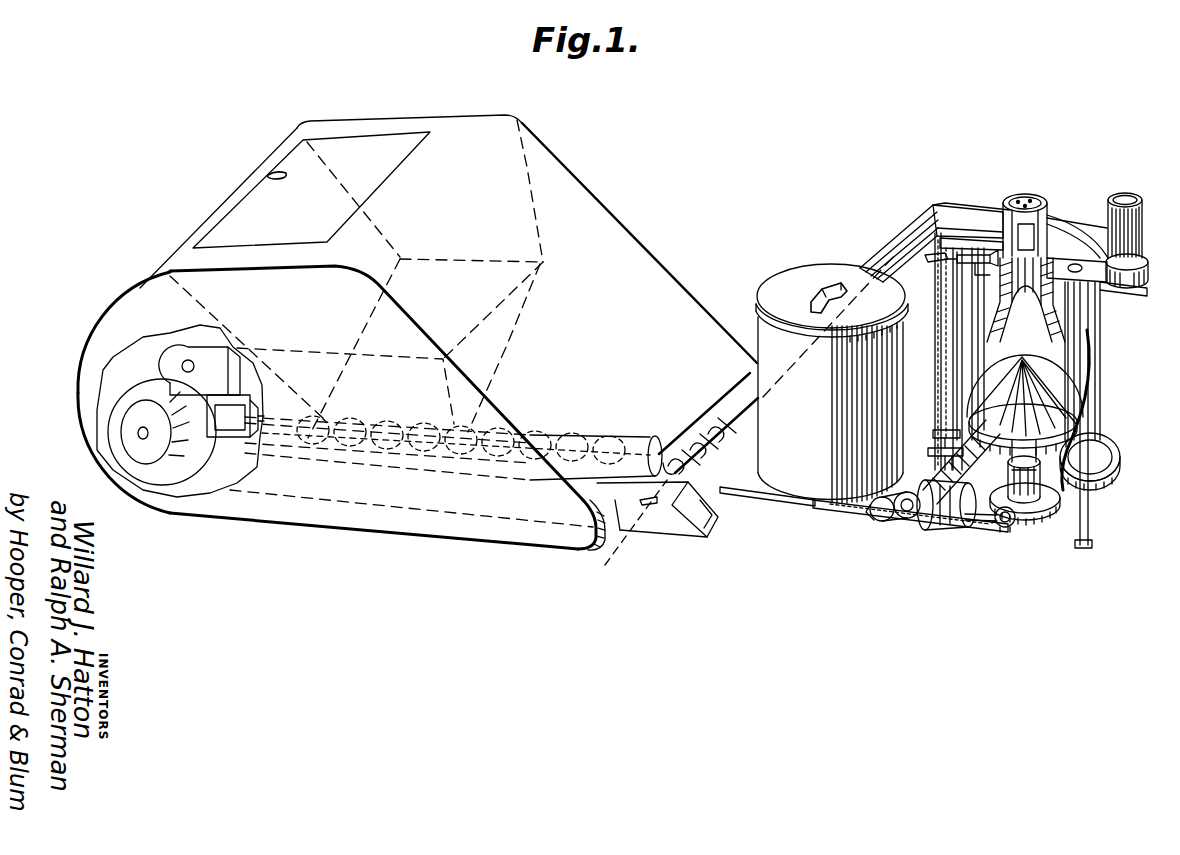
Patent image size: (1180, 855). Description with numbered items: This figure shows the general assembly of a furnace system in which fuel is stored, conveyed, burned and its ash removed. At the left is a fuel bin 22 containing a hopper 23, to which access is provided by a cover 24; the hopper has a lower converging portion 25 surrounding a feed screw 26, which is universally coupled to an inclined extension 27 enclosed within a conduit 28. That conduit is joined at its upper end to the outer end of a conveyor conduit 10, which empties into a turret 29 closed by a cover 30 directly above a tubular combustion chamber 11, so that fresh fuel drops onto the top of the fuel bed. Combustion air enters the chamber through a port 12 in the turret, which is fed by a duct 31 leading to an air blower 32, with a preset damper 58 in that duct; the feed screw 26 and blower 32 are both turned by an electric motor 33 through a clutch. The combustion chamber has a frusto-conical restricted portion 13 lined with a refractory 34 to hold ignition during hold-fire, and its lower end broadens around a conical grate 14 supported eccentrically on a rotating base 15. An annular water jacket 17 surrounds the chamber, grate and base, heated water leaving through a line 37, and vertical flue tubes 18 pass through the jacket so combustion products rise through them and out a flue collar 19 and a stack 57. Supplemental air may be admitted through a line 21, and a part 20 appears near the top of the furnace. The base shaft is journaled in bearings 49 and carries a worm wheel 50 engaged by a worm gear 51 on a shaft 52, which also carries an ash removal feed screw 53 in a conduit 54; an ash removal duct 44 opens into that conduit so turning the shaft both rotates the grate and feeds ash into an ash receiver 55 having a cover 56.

The conveyor conduit 10 is at (950, 212).
The combustion chamber 11 is at (965, 298).
The port 12 is at (1066, 240).
The restricted portion 13 is at (1067, 312).
The conical grate 14 is at (1040, 400).
The rotating base 15 is at (1110, 483).
The annular boiler or water jacket 17 is at (958, 318).
The flue tubes 18 is at (960, 340).
The flue collar 19 is at (968, 237).
The support arm 20 is at (1118, 288).
The line 21 is at (944, 456).
The fuel bin 22 is at (587, 223).
The hopper 23 is at (527, 163).
The cover 24 is at (353, 143).
The lower converging portion 25 is at (516, 341).
The feed screw 26 is at (553, 430).
The inclined extension 27 is at (698, 413).
The conduit 28 is at (912, 228).
The turret 29 is at (1013, 200).
The cover 30 is at (1040, 198).
The duct 31 is at (670, 527).
The air blower 32 is at (113, 438).
The electric motor 33 is at (203, 340).
The refractory 34 is at (1105, 340).
The line 37 is at (942, 262).
The ash removal duct 44 is at (930, 522).
The bearings 49 is at (1018, 478).
The worm wheel 50 is at (1040, 521).
The worm gear 51 is at (1006, 527).
The shaft 52 is at (980, 525).
The ash removal feed screw 53 is at (890, 521).
The conduit 54 is at (847, 517).
The ash receiver 55 is at (790, 460).
The cover 56 is at (793, 280).
The stack 57 is at (1140, 203).
The damper 58 is at (622, 534).